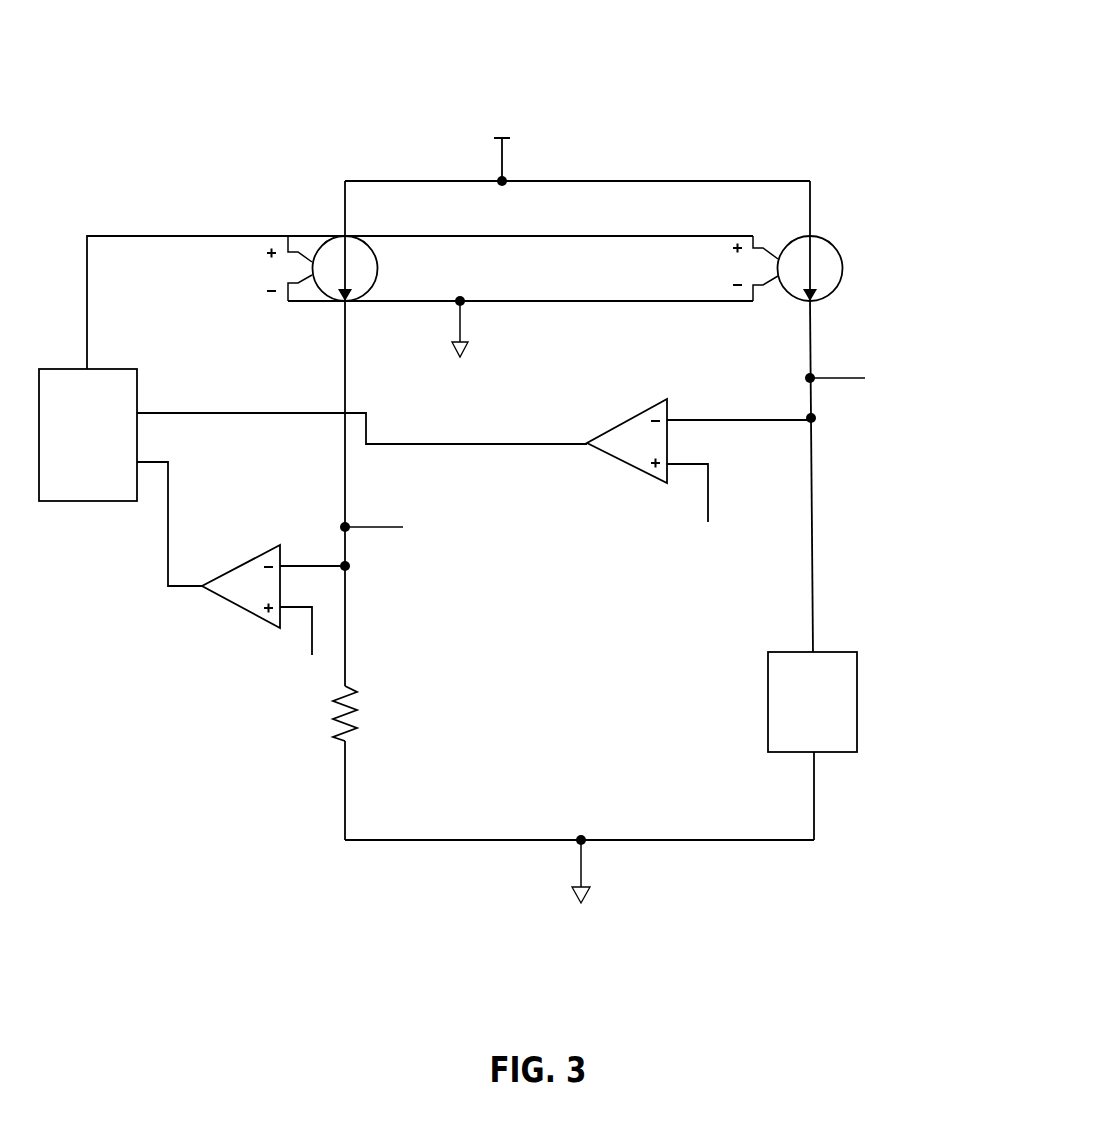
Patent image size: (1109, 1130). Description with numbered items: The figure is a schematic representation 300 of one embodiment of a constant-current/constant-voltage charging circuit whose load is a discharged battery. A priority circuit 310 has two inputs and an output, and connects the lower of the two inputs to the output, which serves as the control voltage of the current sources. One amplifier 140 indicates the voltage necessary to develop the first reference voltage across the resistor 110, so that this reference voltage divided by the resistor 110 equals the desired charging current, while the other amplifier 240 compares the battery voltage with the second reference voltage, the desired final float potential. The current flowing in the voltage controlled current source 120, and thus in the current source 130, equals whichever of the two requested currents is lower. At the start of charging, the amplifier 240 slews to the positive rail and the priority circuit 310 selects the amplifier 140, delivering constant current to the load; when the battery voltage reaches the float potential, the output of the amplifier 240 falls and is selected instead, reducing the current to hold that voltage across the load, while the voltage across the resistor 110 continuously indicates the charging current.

The constant-current/constant-voltage charging circuit 300 is at (671, 66).
The resistor 110 is at (356, 704).
The voltage controlled current source 120 is at (327, 239).
The current source 130 is at (823, 232).
The amplifier 140 is at (264, 552).
The amplifier 240 is at (629, 414).
The priority circuit 310 is at (117, 502).